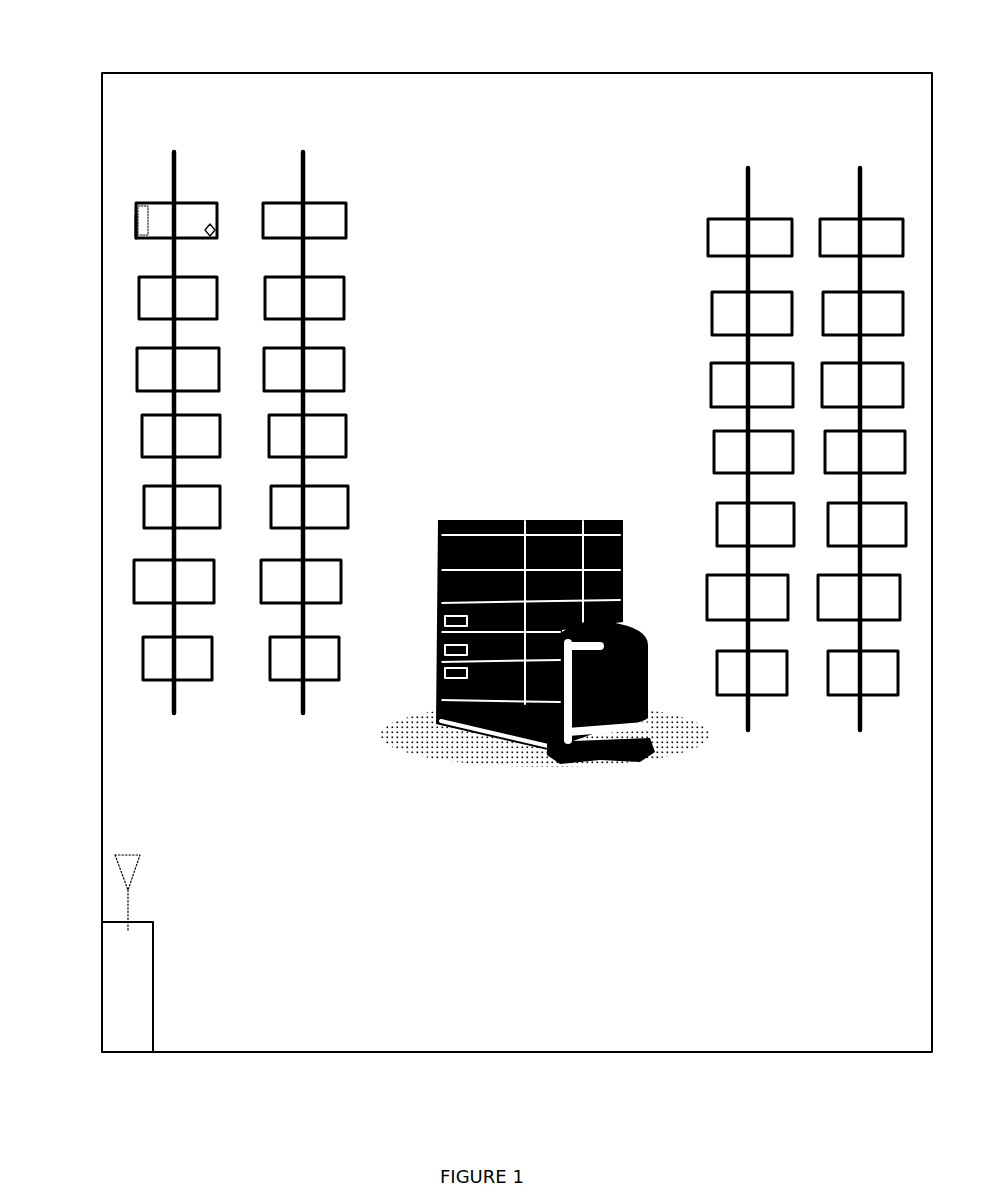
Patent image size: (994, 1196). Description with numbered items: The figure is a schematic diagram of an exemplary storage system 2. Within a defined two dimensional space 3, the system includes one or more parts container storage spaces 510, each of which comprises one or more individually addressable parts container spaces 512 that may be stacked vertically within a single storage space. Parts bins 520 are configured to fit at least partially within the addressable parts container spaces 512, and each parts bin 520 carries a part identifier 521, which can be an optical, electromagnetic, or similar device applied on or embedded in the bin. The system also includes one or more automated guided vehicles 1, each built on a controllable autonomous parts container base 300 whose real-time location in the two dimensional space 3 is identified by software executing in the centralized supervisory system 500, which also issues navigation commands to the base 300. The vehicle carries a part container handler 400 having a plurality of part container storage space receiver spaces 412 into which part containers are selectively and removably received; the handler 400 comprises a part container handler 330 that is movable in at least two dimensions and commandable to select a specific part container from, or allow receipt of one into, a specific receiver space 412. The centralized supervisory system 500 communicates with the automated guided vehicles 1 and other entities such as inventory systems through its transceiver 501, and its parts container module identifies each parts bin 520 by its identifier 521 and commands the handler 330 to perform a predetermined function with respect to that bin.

The automated guided vehicle 1 is at (508, 492).
The storage system 2 is at (545, 61).
The two dimensional space 3 is at (160, 123).
The controllable autonomous parts container base 300 is at (658, 630).
The part container handler 330 is at (617, 697).
The part container handler 400 is at (430, 521).
The part container storage space receiver space 412 is at (440, 553).
The centralized supervisory system 500 is at (130, 998).
The transceiver 501 is at (140, 862).
The parts container storage space 510 is at (126, 211).
The addressable parts container space 512 is at (135, 228).
The parts bin 520 is at (190, 202).
The part identifier 521 is at (210, 237).